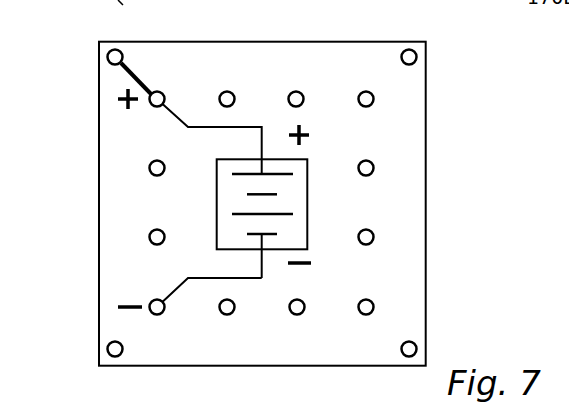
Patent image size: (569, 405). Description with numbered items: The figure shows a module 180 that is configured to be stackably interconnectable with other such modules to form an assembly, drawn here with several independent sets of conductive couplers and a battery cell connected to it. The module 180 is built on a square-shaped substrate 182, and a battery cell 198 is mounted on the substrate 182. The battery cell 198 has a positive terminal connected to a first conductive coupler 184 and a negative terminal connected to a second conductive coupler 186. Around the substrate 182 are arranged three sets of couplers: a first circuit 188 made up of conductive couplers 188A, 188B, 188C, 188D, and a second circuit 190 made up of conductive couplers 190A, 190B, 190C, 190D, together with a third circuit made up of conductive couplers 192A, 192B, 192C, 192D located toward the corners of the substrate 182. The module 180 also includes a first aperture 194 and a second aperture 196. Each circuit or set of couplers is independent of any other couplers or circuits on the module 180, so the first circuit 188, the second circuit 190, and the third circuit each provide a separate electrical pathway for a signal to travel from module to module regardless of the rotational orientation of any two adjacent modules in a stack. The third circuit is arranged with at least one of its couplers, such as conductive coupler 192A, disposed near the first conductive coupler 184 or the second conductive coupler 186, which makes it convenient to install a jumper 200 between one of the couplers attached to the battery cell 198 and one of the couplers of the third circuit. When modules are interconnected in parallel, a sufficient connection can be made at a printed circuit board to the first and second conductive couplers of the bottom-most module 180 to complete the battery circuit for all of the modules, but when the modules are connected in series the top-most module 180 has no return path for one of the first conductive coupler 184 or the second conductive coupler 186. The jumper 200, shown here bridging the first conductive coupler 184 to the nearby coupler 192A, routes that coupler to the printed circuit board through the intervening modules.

The module 180 is at (447, 253).
The substrate 182 is at (373, 133).
The first conductive coupler 184 is at (157, 90).
The second conductive coupler 186 is at (157, 315).
The first circuit 188 is at (136, 224).
The conductive coupler 188A is at (149, 237).
The conductive coupler 188B is at (227, 91).
The conductive coupler 188C is at (374, 168).
The conductive coupler 188D is at (297, 315).
The second circuit 190 is at (130, 205).
The conductive coupler 190A is at (148, 168).
The conductive coupler 190B is at (295, 91).
The conductive coupler 190C is at (374, 237).
The conductive coupler 190D is at (227, 315).
The conductive coupler 192A is at (106, 58).
The conductive coupler 192B is at (413, 64).
The conductive coupler 192C is at (407, 341).
The conductive coupler 192D is at (121, 356).
The first aperture 194 is at (366, 91).
The second aperture 196 is at (374, 307).
The battery cell 198 is at (308, 223).
The jumper 200 is at (127, 77).